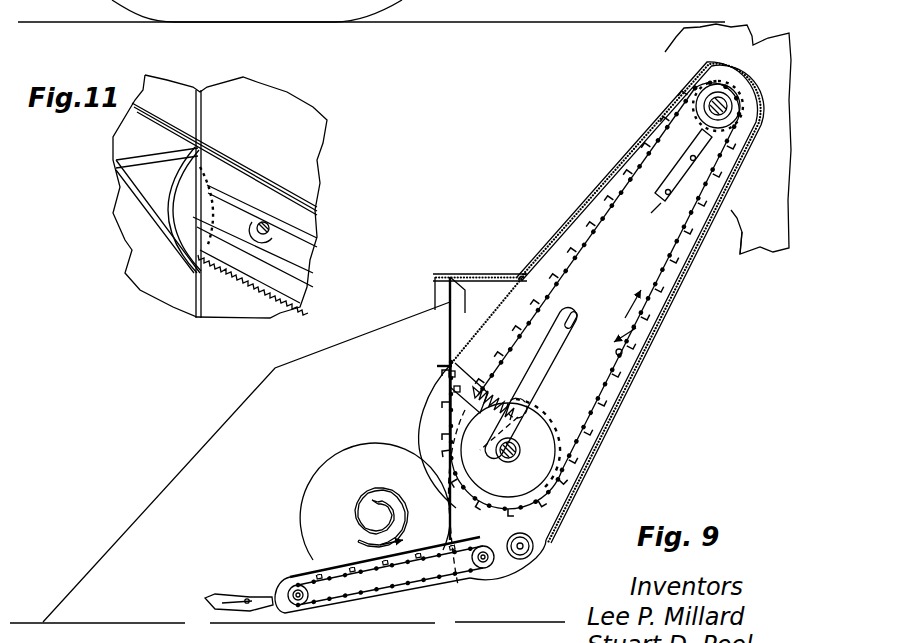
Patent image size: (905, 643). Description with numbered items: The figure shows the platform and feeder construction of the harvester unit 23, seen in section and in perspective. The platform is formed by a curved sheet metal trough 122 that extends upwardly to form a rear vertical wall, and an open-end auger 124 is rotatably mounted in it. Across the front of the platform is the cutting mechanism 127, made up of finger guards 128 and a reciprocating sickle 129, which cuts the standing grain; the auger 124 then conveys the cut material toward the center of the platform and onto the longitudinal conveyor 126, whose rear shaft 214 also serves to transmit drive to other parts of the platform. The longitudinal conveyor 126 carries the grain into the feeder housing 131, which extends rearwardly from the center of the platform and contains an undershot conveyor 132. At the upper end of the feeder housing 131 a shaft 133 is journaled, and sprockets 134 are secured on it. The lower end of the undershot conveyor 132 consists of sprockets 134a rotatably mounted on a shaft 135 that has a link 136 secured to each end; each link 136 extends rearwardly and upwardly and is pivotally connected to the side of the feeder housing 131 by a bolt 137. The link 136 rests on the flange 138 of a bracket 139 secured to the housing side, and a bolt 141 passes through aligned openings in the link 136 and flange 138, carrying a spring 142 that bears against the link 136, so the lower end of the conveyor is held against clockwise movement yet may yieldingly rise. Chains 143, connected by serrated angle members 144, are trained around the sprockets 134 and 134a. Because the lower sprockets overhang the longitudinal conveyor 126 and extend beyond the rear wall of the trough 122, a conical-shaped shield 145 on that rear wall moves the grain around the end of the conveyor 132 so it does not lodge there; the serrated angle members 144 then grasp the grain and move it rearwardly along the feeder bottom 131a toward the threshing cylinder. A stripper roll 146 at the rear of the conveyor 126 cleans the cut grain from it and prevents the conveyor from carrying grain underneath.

In FIG. 9, the platform unit 23 is at (595, 296).
In FIG. 9, the trough 122 is at (358, 348).
In FIG. 11, the trough 122 is at (135, 134).
In FIG. 9, the auger 124 is at (388, 452).
In FIG. 9, the longitudinal conveyor 126 is at (317, 578).
In FIG. 9, the cutting mechanism 127 is at (207, 595).
In FIG. 9, the finger guards 128 is at (217, 600).
In FIG. 9, the reciprocating sickle 129 is at (248, 598).
In FIG. 9, the feeder housing 131 is at (657, 323).
In FIG. 11, the feeder housing 131 is at (287, 103).
In FIG. 9, the feeder bottom 131a is at (680, 287).
In FIG. 9, the undershot conveyor 132 is at (600, 190).
In FIG. 9, the shaft 133 is at (692, 88).
In FIG. 9, the sprockets 134 is at (708, 103).
In FIG. 9, the sprockets 134a is at (543, 443).
In FIG. 11, the sprockets 134a is at (257, 197).
In FIG. 9, the shaft 135 is at (521, 456).
In FIG. 11, the shaft 135 is at (298, 245).
In FIG. 9, the link 136 is at (612, 372).
In FIG. 9, the bolt 137 is at (580, 305).
In FIG. 9, the flange 138 is at (528, 407).
In FIG. 9, the bracket 139 is at (468, 397).
In FIG. 9, the bolt 141 is at (452, 360).
In FIG. 9, the spring 142 is at (516, 389).
In FIG. 9, the chains 143 is at (622, 352).
In FIG. 9, the serrated angle members 144 is at (612, 400).
In FIG. 11, the serrated angle members 144 is at (238, 248).
In FIG. 9, the conical-shaped shield 145 is at (452, 368).
In FIG. 11, the conical-shaped shield 145 is at (145, 186).
In FIG. 9, the stripper roll 146 is at (535, 563).
In FIG. 9, the rear shaft 214 is at (503, 560).